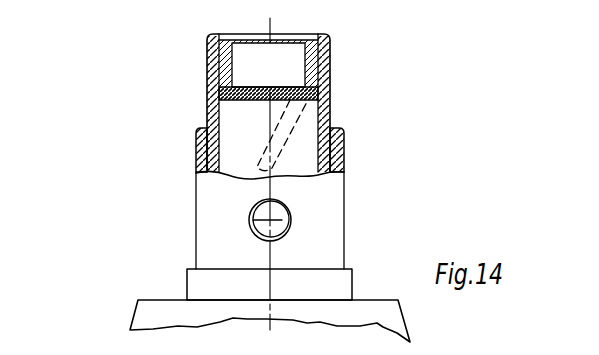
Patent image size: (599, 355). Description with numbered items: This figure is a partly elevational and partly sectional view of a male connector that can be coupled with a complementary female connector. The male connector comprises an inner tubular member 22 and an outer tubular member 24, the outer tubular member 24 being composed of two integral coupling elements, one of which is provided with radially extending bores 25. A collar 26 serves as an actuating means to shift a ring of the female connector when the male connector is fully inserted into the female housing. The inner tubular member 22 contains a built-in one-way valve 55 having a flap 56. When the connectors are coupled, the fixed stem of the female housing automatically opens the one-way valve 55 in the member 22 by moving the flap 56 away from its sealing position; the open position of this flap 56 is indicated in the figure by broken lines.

The inner tubular member 22 is at (208, 41).
The one-way valve 55 is at (207, 59).
The flap 56 is at (207, 91).
The outer tubular member 24 is at (196, 136).
The radially extending bores 25 is at (250, 203).
The collar 26 is at (187, 282).